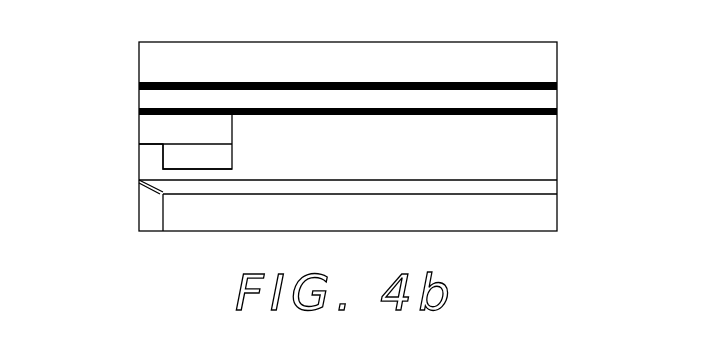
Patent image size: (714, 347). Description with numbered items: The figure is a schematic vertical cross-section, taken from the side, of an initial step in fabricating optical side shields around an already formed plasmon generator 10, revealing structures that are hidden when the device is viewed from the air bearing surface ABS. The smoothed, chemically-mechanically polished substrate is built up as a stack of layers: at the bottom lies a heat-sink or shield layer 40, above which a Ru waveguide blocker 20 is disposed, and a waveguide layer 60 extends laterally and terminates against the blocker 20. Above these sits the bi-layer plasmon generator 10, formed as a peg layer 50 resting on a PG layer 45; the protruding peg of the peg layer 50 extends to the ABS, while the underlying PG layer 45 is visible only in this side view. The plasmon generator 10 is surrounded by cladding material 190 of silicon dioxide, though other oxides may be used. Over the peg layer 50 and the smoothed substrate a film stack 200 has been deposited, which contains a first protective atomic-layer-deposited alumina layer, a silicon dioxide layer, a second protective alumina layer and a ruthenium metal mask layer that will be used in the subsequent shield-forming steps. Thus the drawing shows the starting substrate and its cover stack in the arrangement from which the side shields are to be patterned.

The plasmon generator 10 is at (243, 115).
The Ru waveguide blocker 20 is at (140, 199).
The heat-sink layer 40 is at (148, 218).
The PG layer 45 is at (180, 156).
The peg layer 50 is at (150, 133).
The waveguide layer 60 is at (548, 184).
The cladding material 190 is at (548, 149).
The film stack 200 is at (568, 42).
The air bearing surface ABS is at (124, 71).